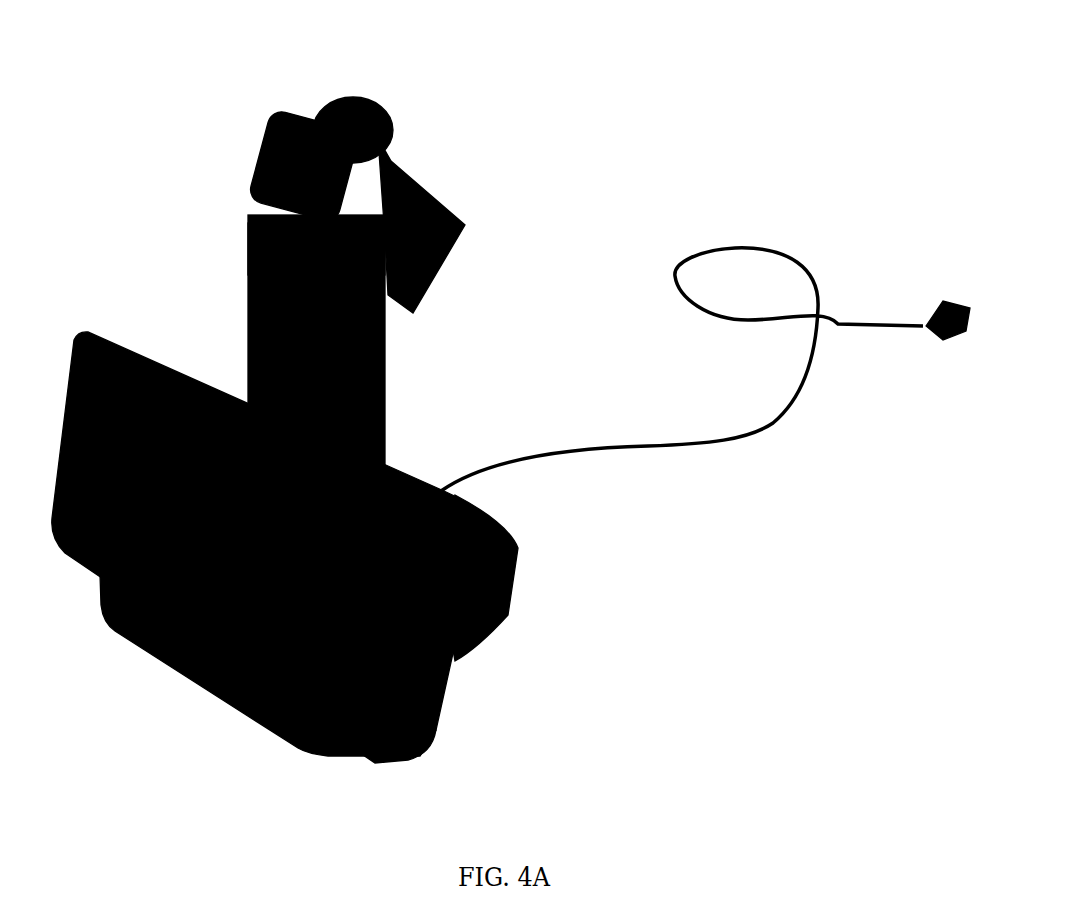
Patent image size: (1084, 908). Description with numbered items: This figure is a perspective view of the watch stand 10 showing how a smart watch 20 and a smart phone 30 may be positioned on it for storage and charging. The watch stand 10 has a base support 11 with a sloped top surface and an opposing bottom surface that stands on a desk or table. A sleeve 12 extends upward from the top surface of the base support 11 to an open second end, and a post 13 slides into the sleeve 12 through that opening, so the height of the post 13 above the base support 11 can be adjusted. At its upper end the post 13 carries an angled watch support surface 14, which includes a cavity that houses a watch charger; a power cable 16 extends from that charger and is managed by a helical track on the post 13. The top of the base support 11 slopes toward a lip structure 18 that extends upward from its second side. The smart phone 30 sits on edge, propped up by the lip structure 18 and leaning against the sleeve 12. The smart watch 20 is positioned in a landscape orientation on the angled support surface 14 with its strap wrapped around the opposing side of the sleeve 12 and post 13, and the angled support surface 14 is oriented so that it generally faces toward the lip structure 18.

The watch stand 10 is at (548, 262).
The base support 11 is at (510, 540).
The sleeve 12 is at (375, 405).
The post 13 is at (238, 265).
The angled watch support surface 14 is at (340, 92).
The power cable 16 is at (747, 438).
The lip structure 18 is at (330, 723).
The smart watch 20 is at (255, 135).
The smart phone 30 is at (423, 683).